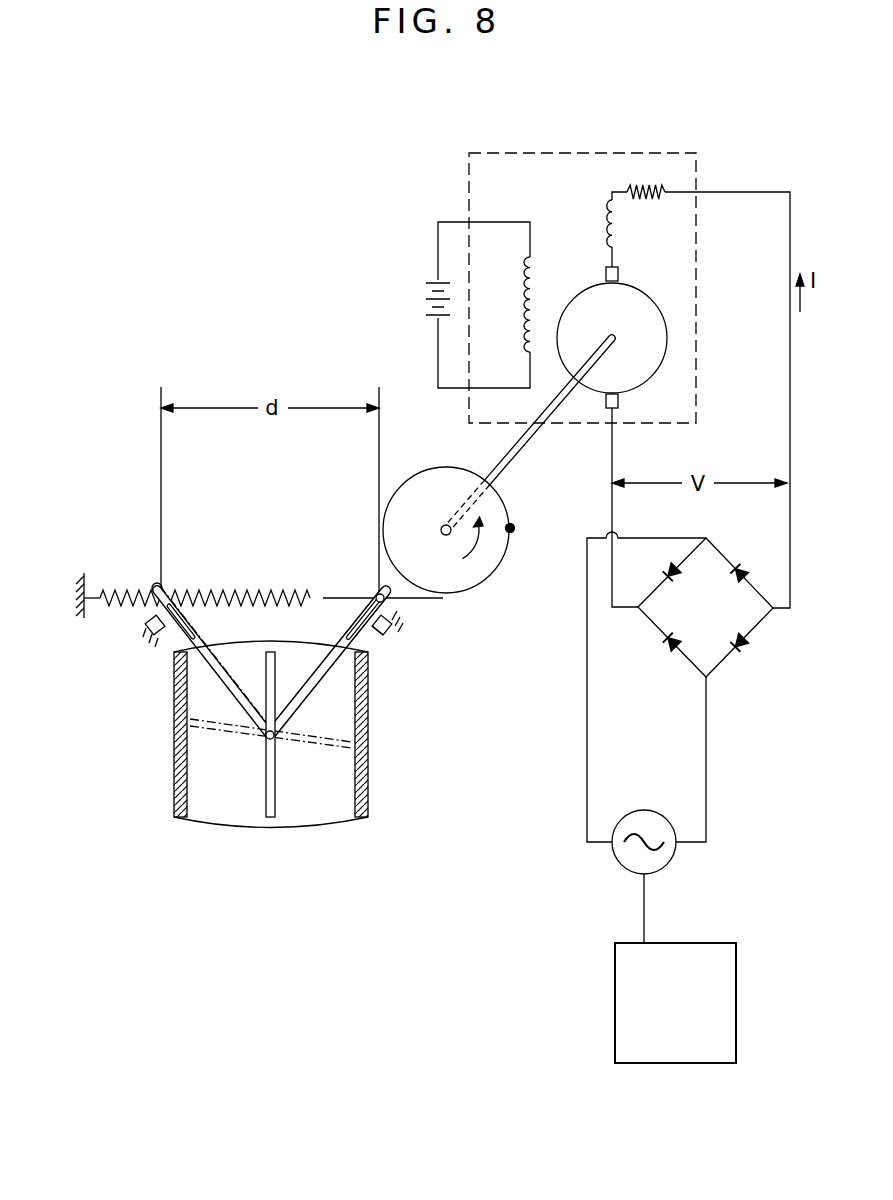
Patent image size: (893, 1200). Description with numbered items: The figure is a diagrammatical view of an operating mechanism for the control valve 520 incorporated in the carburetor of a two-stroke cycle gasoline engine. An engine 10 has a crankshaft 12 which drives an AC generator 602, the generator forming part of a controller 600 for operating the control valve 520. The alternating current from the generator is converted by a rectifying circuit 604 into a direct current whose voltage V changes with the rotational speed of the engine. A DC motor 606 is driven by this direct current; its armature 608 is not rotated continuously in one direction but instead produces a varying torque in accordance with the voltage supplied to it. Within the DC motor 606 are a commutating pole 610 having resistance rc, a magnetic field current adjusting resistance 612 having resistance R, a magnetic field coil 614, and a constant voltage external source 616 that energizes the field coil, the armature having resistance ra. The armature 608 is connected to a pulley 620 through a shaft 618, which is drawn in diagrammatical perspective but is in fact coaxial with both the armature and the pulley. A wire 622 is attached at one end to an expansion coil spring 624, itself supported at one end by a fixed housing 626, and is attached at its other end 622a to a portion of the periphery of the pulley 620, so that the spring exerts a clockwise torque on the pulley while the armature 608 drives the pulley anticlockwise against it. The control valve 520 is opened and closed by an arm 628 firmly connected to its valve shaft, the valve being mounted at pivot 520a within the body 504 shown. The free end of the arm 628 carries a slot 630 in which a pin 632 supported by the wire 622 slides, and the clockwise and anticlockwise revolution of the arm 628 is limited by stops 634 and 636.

The engine 10 is at (737, 972).
The crankshaft 12 is at (642, 905).
The tank 504 is at (312, 828).
The control valve 520 is at (264, 795).
The pivot 520a is at (264, 738).
The controller 600 is at (570, 647).
The AC generator 602 is at (644, 810).
The rectifying circuit 604 is at (723, 660).
The DC motor 606 is at (635, 152).
The armature 608 is at (666, 313).
The commutating pole 610 is at (616, 246).
The magnetic field current adjusting resistance 612 is at (632, 185).
The magnetic field coil 614 is at (539, 287).
The constant voltage external source 616 is at (433, 277).
The shaft 618 is at (537, 430).
The pulley 620 is at (437, 468).
The wire 622 is at (416, 602).
The other end of wire 622a is at (513, 532).
The expansion coil spring 624 is at (250, 590).
The fixed housing 626 is at (82, 580).
The arm 628 is at (323, 685).
The slot 630 is at (357, 607).
The pin 632 is at (377, 593).
The stop 634 is at (374, 637).
The stop 636 is at (142, 617).